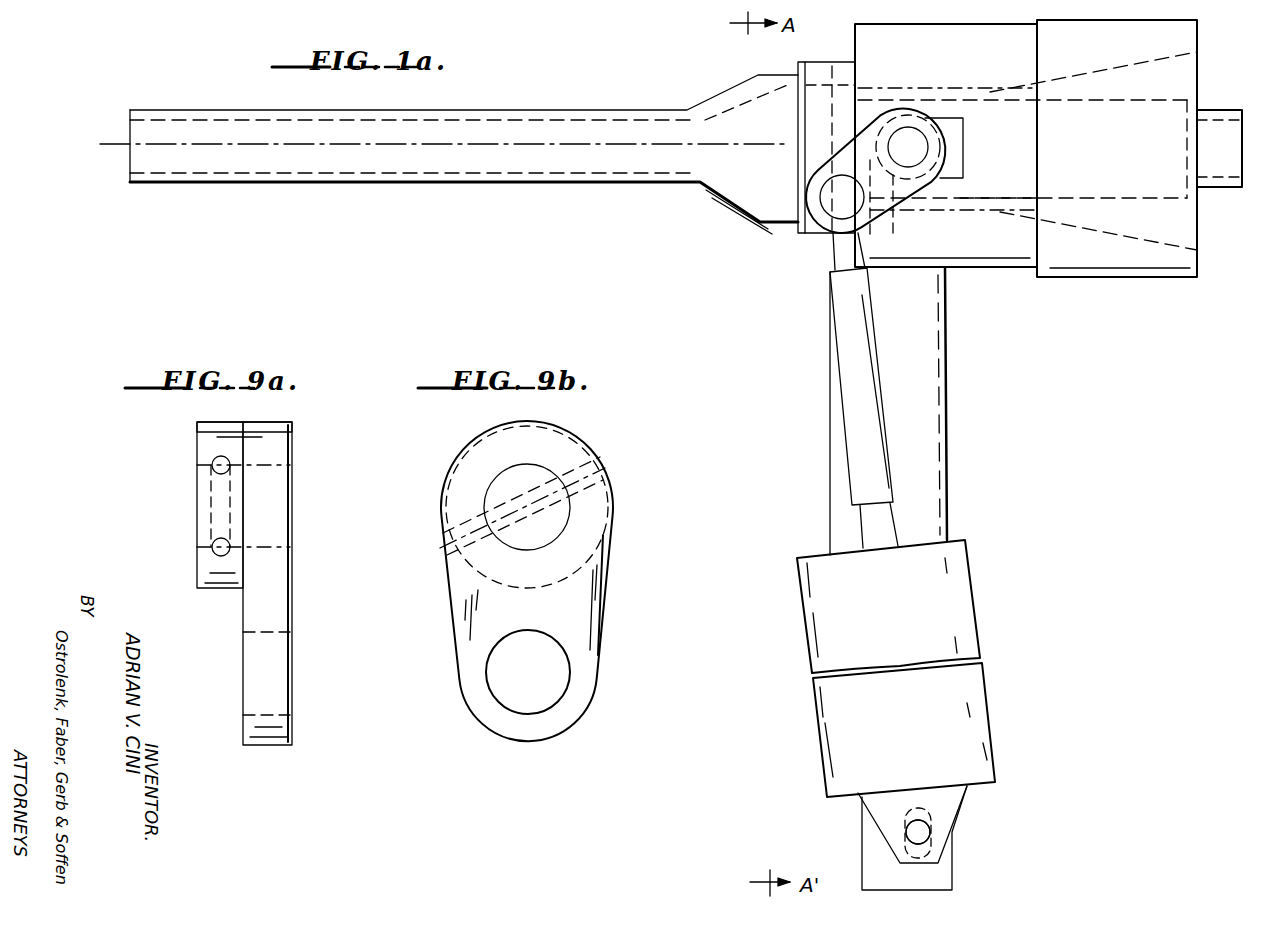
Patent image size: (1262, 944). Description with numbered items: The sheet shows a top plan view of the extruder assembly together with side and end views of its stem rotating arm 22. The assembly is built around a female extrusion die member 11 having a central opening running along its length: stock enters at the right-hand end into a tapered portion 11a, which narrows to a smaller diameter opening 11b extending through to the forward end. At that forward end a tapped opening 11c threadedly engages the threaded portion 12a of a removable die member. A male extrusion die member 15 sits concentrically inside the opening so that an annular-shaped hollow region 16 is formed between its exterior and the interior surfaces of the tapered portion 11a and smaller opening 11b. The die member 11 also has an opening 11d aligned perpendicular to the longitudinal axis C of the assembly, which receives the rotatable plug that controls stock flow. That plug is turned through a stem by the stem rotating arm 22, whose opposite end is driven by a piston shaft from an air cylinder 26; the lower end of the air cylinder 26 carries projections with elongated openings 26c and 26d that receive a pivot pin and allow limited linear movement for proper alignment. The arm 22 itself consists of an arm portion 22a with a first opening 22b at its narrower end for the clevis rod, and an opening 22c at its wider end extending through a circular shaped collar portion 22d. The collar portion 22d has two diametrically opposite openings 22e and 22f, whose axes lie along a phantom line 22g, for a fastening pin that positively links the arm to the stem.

In FIG. 1A, the longitudinal axis C is at (563, 146).
In FIG. 1A, the female extrusion die member 11 is at (1084, 278).
In FIG. 1A, the tapered portion 11a is at (1106, 234).
In FIG. 1A, the smaller diameter opening 11b is at (995, 211).
In FIG. 1A, the tapped opening 11c is at (838, 78).
In FIG. 1A, the opening 11d is at (950, 152).
In FIG. 1A, the threaded portion 12a is at (817, 75).
In FIG. 1A, the male extrusion die member 15 is at (1003, 100).
In FIG. 1A, the annular-shaped hollow region 16 is at (1100, 86).
In FIG. 1A, the stem rotating arm 22 is at (888, 205).
In FIG. 9A, the stem rotating arm 22 is at (150, 484).
In FIG. 9B, the stem rotating arm 22 is at (665, 552).
In FIG. 9A, the arm portion 22a is at (294, 685).
In FIG. 9B, the arm portion 22a is at (600, 615).
In FIG. 9A, the first opening 22b is at (252, 712).
In FIG. 9B, the first opening 22b is at (570, 622).
In FIG. 9A, the opening 22c is at (202, 545).
In FIG. 9B, the opening 22c is at (512, 478).
In FIG. 9A, the circular shaped collar portion 22d is at (217, 422).
In FIG. 9B, the opening 22e is at (605, 459).
In FIG. 9B, the opening 22f is at (440, 556).
In FIG. 9B, the phantom line 22g is at (537, 503).
In FIG. 1A, the air cylinder 26 is at (976, 613).
In FIG. 1A, the elongated opening 26c is at (912, 814).
In FIG. 1A, the elongated opening 26d is at (926, 804).